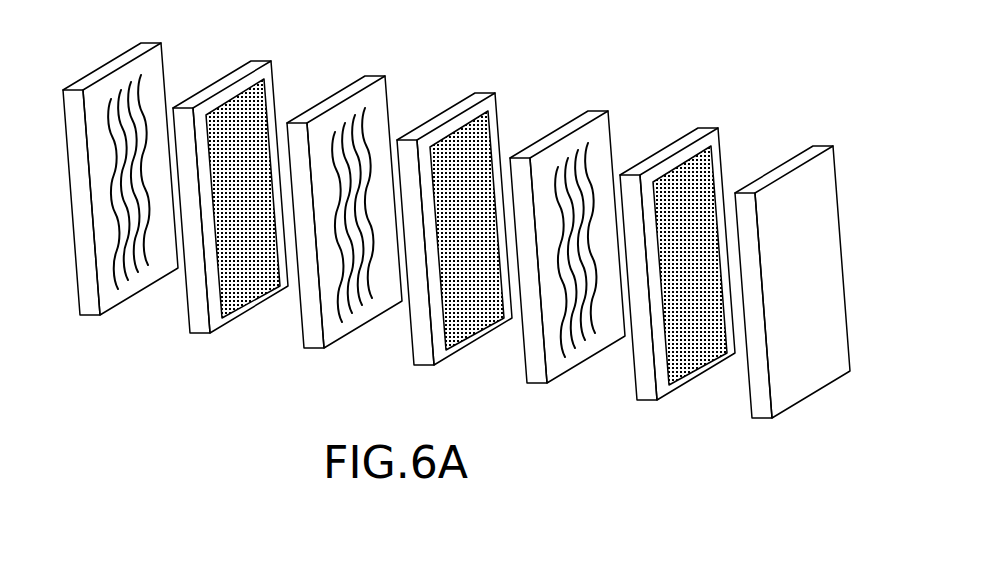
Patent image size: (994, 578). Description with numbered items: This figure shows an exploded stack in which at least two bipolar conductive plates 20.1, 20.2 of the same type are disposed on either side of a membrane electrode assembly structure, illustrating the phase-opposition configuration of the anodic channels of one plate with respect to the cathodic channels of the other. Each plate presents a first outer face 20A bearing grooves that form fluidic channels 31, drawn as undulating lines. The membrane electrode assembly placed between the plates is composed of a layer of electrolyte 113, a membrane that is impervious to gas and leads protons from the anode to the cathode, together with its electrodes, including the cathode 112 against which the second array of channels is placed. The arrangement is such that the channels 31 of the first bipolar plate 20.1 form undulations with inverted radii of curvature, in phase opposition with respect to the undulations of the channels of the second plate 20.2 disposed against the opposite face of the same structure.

The first bipolar plate 20.1 is at (280, 348).
The second bipolar plate 20.2 is at (573, 380).
The first outer face 20A is at (504, 191).
The fluidic channels 31 is at (370, 127).
The cathode 112 is at (484, 131).
The layer of electrolyte 113 is at (500, 186).